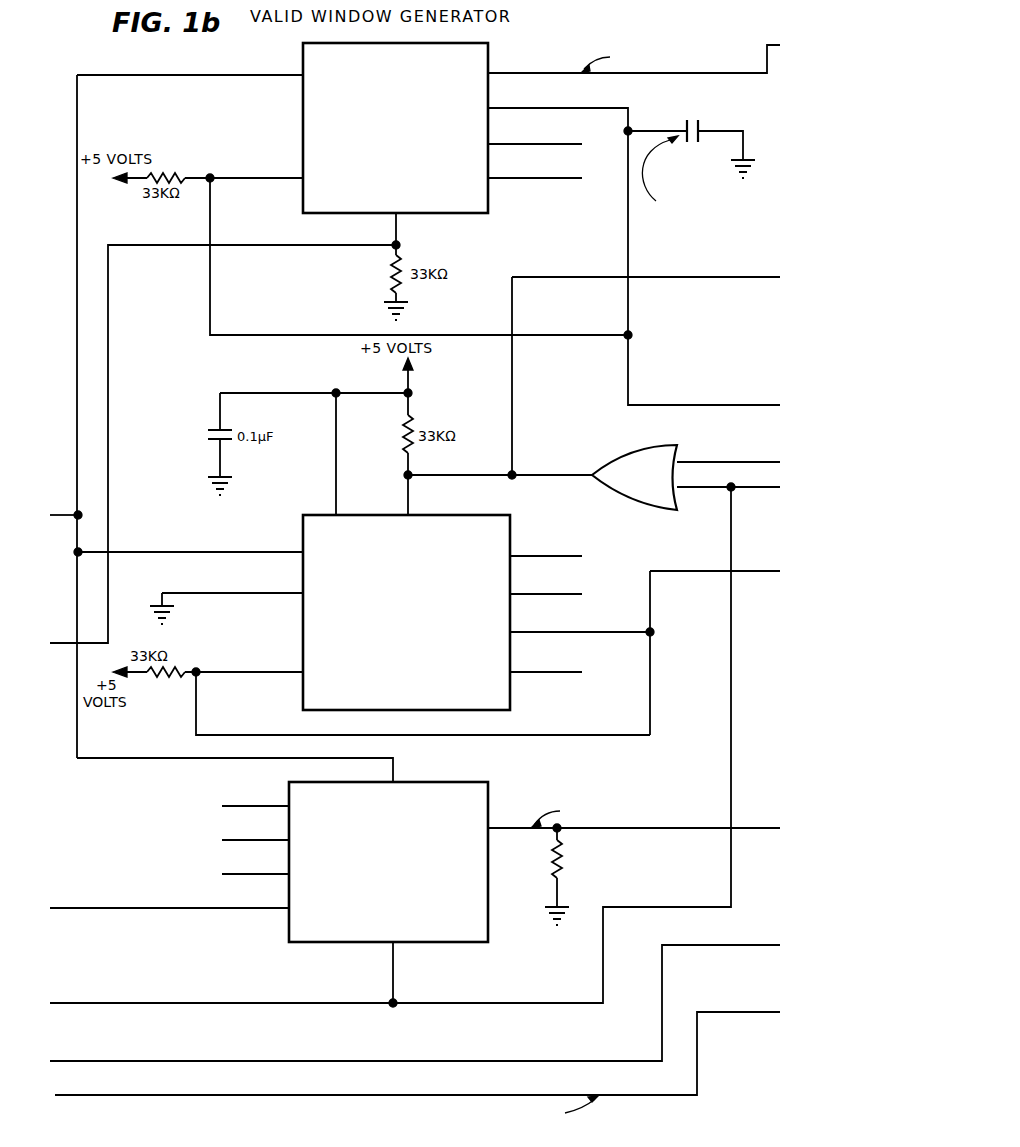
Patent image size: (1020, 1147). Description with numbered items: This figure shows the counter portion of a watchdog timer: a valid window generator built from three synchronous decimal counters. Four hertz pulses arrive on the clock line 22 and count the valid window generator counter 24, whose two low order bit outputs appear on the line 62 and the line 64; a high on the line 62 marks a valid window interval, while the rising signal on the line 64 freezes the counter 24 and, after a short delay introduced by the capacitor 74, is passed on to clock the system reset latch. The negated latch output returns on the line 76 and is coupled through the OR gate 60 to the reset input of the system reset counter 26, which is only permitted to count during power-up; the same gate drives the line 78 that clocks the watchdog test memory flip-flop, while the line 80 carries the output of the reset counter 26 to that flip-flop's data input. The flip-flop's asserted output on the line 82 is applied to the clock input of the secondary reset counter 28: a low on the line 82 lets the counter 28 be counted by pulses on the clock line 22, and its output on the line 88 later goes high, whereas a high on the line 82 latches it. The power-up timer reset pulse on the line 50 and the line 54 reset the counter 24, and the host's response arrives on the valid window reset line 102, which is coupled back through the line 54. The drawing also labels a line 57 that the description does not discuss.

The clock line 22 is at (62, 514).
The valid window generator counter 24 is at (397, 139).
The system reset counter 26 is at (406, 614).
The secondary reset counter 28 is at (307, 866).
The line 50 is at (770, 487).
The line 54 is at (228, 1062).
The line 57 is at (108, 487).
The OR gate 60 is at (628, 508).
The line 62 is at (526, 73).
The line 64 is at (565, 108).
The capacitor 74 is at (637, 131).
The line 76 is at (712, 462).
The line 78 is at (712, 277).
The line 80 is at (782, 572).
The asserted output line 82 is at (674, 828).
The line 88 is at (142, 908).
The valid window reset line 102 is at (256, 1096).